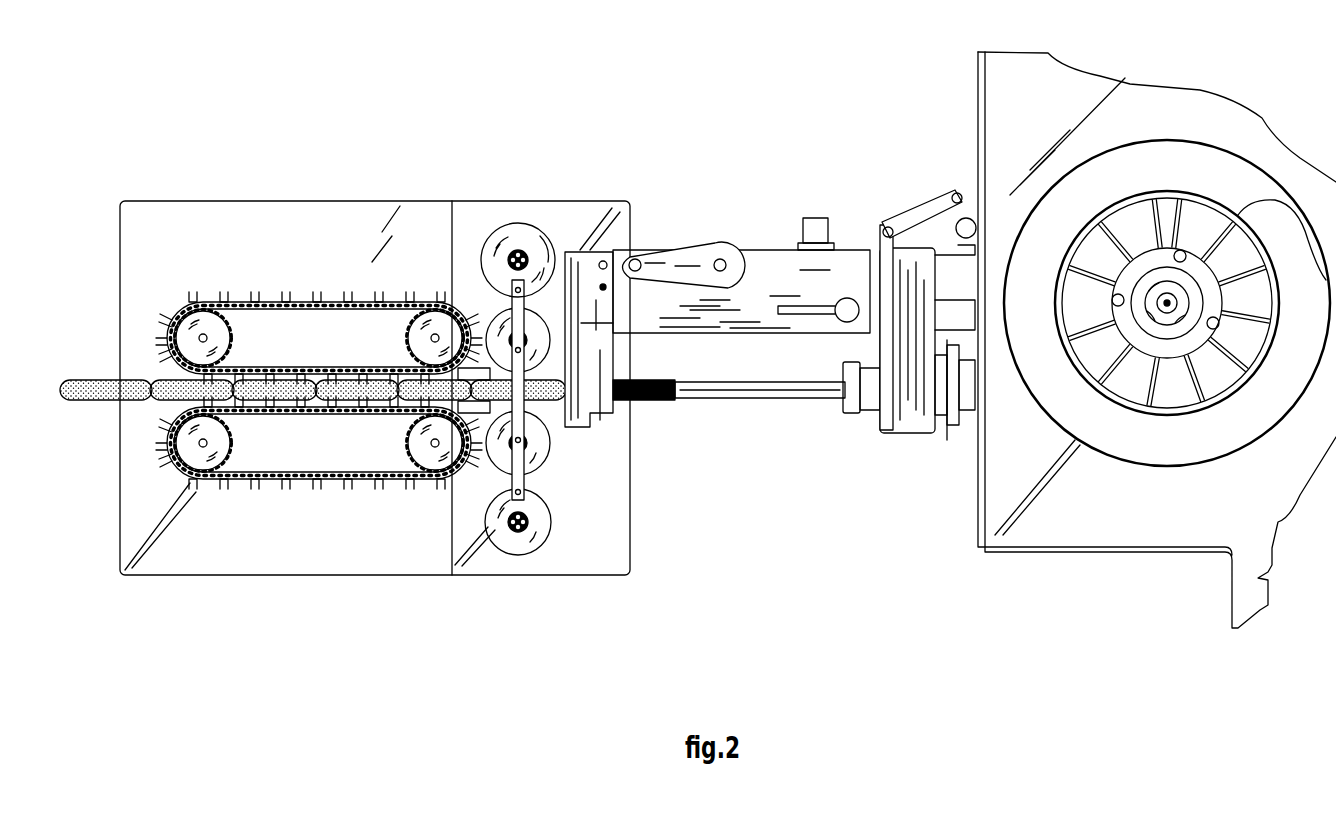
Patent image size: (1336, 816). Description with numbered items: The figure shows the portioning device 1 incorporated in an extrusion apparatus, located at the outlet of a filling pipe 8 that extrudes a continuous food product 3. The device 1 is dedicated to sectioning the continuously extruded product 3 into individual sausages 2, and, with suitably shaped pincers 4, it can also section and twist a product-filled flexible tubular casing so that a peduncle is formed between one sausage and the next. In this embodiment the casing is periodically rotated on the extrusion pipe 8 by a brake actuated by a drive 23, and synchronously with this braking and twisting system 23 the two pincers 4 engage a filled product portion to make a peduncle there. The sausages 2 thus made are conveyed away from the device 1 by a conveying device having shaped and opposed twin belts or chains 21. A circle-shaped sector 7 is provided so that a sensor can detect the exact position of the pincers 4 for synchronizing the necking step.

The portioning device 1 is at (570, 201).
The sausages 2 is at (150, 378).
The food product 3 is at (548, 400).
The pincers 4 is at (462, 300).
The circle-shaped sector 7 is at (518, 223).
The filling pipe 8 is at (742, 398).
The twin belts or chains 21 is at (282, 301).
The drive 23 is at (903, 443).